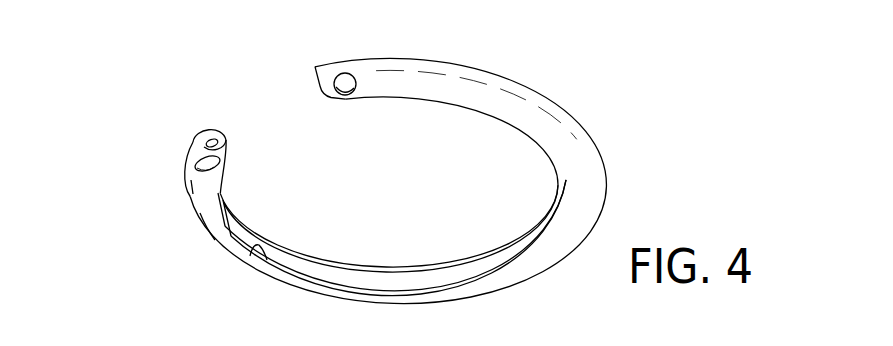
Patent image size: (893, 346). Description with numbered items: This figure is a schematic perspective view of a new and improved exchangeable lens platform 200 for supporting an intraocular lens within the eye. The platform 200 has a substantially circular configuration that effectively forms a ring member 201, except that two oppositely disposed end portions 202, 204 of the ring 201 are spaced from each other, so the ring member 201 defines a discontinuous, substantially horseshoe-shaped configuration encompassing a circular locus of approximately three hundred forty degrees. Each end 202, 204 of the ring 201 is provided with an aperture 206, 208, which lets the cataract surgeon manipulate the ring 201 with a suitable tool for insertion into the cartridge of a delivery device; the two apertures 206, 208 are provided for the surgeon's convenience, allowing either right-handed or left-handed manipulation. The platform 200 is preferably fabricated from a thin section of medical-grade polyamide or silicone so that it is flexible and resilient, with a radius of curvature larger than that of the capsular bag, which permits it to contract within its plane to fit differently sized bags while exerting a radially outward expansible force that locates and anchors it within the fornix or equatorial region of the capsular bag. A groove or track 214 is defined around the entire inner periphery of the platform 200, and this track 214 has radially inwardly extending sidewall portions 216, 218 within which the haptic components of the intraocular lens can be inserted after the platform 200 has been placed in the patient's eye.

The exchangeable lens platform 200 is at (607, 114).
The ring member 201 is at (483, 78).
The first end portion 202 is at (212, 131).
The second end portion 204 is at (322, 66).
The aperture 206 is at (203, 173).
The aperture 208 is at (347, 99).
The groove or track 214 is at (378, 283).
The sidewall portion 216 is at (250, 254).
The sidewall portion 218 is at (490, 250).